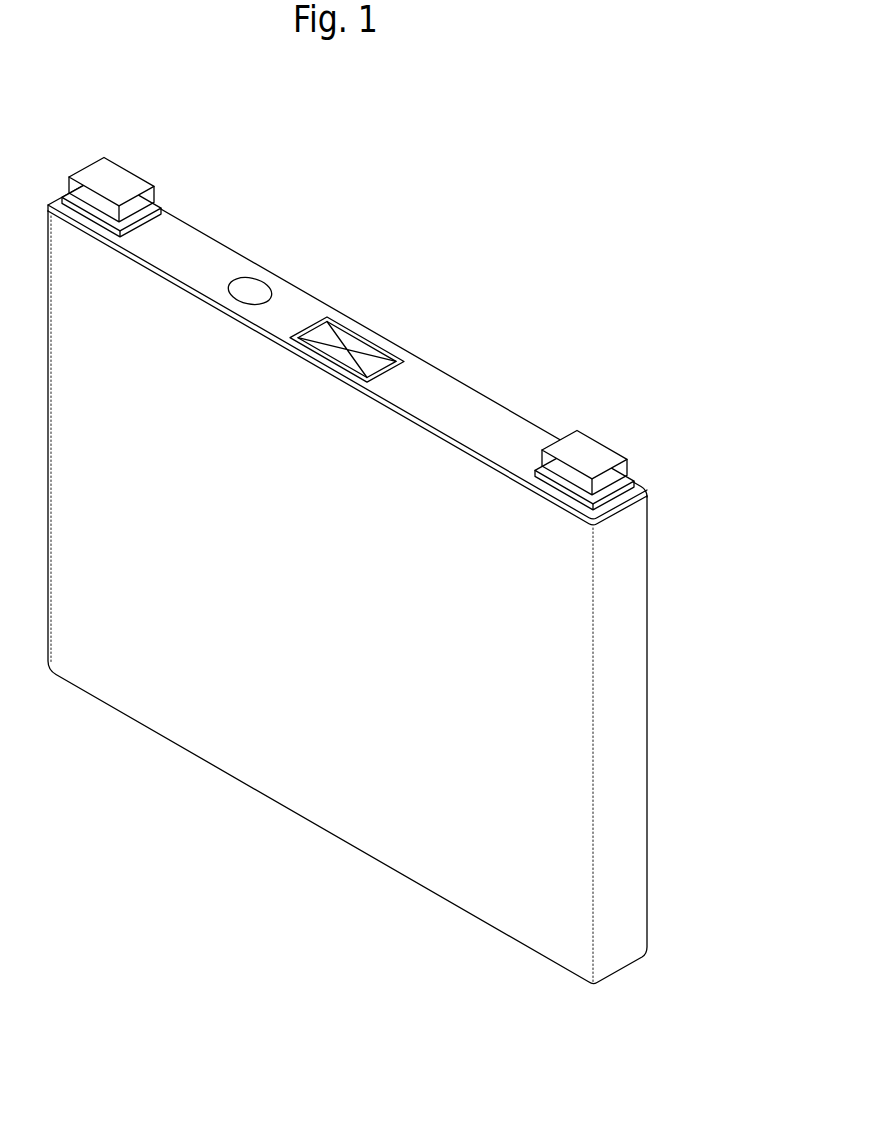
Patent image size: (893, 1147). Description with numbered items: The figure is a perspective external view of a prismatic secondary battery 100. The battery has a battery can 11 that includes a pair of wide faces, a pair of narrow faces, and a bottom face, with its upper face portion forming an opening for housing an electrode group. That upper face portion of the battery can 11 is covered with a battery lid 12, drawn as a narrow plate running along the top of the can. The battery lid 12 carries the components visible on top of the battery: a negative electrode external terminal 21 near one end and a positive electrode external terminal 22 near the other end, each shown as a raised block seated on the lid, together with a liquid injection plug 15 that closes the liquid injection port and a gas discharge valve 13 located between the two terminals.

The prismatic secondary battery 100 is at (523, 221).
The battery can 11 is at (311, 783).
The battery lid 12 is at (470, 408).
The gas discharge valve 13 is at (363, 356).
The liquid injection plug 15 is at (250, 290).
The negative electrode external terminal 21 is at (595, 447).
The positive electrode external terminal 22 is at (118, 175).